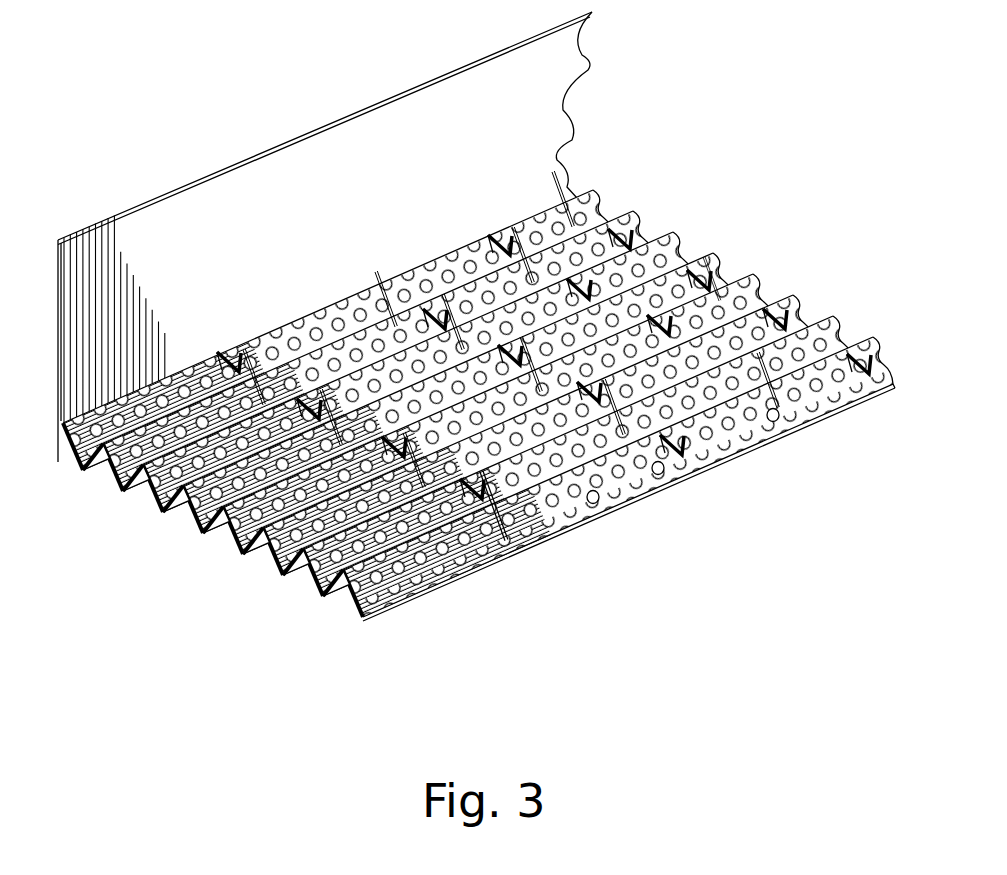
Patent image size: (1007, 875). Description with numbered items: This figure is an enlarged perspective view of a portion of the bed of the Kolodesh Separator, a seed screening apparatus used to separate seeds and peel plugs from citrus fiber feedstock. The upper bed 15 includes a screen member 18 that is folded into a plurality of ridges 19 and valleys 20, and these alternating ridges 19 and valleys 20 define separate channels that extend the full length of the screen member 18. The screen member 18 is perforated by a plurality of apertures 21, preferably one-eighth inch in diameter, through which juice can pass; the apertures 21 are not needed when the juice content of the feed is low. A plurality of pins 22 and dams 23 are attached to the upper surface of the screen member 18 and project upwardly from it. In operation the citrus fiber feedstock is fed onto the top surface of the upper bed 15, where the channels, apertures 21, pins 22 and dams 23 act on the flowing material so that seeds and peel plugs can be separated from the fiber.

The upper bed 15 is at (479, 418).
The screen member 18 is at (712, 315).
The ridges 19 is at (657, 232).
The valleys 20 is at (208, 527).
The apertures 21 is at (773, 421).
The pins 22 is at (375, 272).
The dams 23 is at (317, 593).